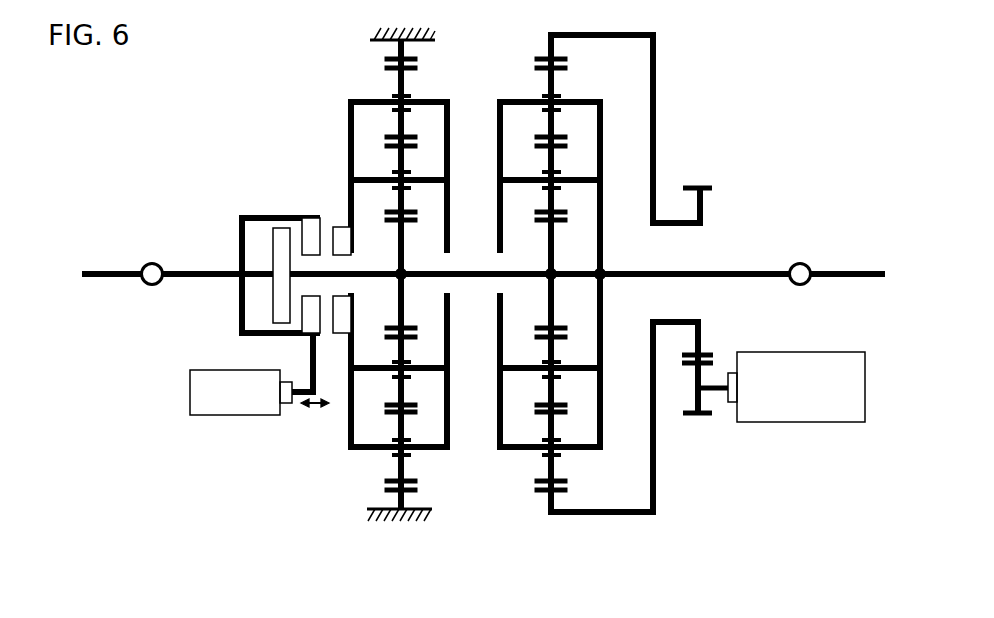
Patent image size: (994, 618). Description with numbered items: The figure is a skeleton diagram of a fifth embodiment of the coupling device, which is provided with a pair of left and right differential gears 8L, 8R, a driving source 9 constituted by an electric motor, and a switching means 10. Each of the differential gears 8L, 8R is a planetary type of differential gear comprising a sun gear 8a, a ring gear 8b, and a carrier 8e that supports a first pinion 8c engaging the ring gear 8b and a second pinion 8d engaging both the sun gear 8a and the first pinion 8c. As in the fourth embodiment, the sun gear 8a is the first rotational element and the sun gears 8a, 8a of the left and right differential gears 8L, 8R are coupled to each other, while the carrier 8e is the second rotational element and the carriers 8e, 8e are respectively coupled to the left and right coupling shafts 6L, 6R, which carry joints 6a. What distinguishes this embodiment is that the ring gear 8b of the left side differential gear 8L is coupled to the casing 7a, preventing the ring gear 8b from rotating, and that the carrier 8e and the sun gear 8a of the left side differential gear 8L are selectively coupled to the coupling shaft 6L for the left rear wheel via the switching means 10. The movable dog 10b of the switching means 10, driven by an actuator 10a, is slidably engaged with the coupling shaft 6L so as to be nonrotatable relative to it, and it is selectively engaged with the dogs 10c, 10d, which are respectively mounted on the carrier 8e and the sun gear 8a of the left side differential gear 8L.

The left coupling shaft 6L is at (114, 270).
The right coupling shaft 6R is at (850, 270).
The joint 6a is at (155, 287).
The casing 7a is at (402, 521).
The left differential gear 8L is at (348, 72).
The right differential gear 8R is at (657, 65).
The sun gear 8a is at (393, 240).
The ring gear 8b is at (420, 60).
The first pinion 8c is at (390, 69).
The second pinion 8d is at (385, 213).
The carrier 8e is at (351, 165).
The driving source 9 is at (792, 424).
The switching means 10 is at (292, 418).
The actuator 10a is at (218, 410).
The movable dog 10b is at (311, 305).
The dog 10c is at (340, 316).
The dog 10d is at (278, 256).